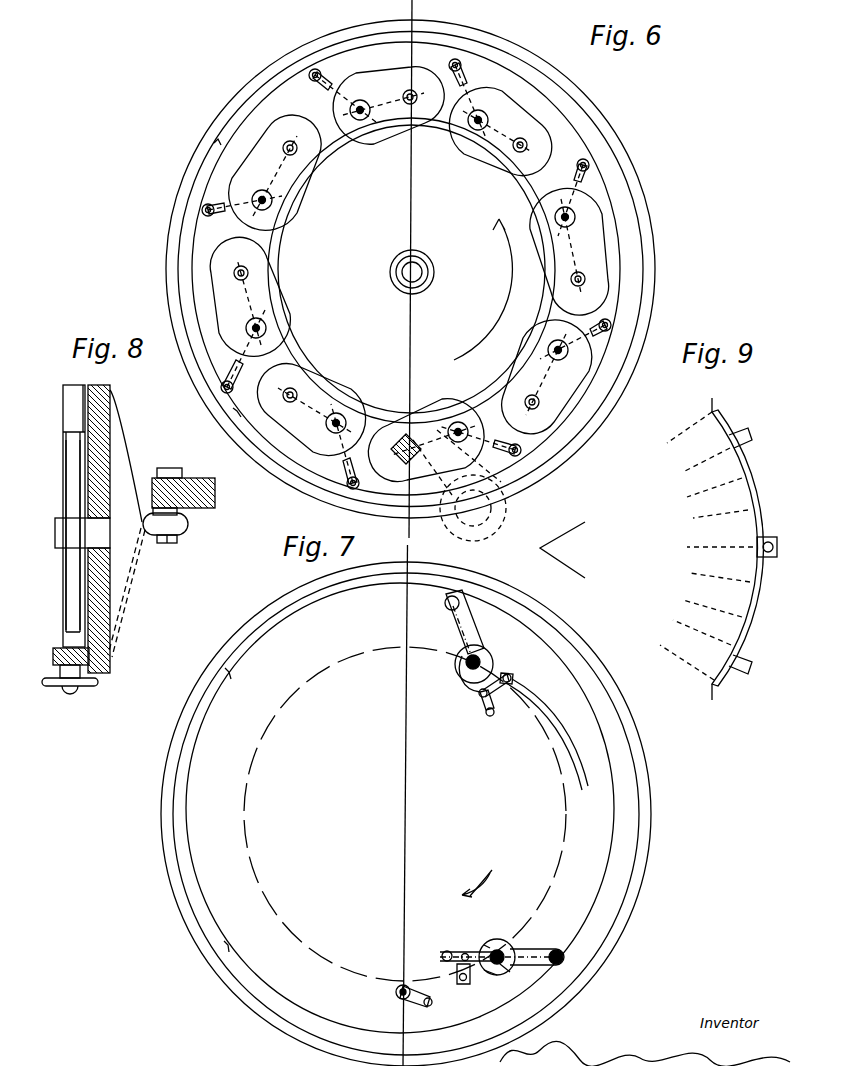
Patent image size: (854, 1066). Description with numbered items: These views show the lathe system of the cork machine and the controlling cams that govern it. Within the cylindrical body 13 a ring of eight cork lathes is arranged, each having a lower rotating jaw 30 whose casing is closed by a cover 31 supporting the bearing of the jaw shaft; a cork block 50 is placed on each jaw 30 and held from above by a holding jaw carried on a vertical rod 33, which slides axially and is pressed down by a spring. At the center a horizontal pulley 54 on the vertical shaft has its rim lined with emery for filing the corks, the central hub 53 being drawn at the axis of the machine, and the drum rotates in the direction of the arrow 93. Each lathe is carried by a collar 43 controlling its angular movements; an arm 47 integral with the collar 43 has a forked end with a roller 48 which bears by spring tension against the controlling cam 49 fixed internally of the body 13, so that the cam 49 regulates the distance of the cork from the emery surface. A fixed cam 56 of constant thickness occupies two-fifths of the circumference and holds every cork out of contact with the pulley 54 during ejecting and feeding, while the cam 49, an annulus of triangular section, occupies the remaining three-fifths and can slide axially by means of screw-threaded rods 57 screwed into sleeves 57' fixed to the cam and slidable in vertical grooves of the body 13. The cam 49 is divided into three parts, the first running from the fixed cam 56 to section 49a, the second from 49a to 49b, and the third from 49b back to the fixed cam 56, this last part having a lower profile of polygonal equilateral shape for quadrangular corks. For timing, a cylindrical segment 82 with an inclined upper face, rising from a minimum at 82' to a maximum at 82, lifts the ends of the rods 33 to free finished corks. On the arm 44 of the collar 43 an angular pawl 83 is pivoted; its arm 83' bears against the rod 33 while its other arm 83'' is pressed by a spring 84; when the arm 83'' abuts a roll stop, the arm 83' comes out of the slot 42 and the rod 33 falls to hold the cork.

In FIG. 6, the cylindrical body 13 is at (200, 140).
In FIG. 7, the cylindrical body 13 is at (164, 770).
In FIG. 8, the cylindrical body 13 is at (110, 656).
In FIG. 6, the rotating jaw 30 is at (419, 244).
In FIG. 6, the cover 31 is at (220, 306).
In FIG. 6, the vertical rod 33 is at (417, 263).
In FIG. 7, the vertical rod 33 is at (481, 664).
In FIG. 7, the slot 42 is at (494, 972).
In FIG. 7, the collar 43 is at (458, 655).
In FIG. 7, the arm 44 is at (465, 952).
In FIG. 7, the arm 47 is at (470, 640).
In FIG. 8, the arm 47 is at (214, 500).
In FIG. 7, the roller 48 is at (446, 604).
In FIG. 8, the roller 48 is at (187, 524).
In FIG. 6, the controlling cam 49 is at (212, 163).
In FIG. 7, the controlling cam 49 is at (302, 607).
In FIG. 8, the controlling cam 49 is at (124, 468).
In FIG. 9, the controlling cam 49 is at (750, 598).
In FIG. 6, the cam section 49a is at (237, 412).
In FIG. 7, the cam section 49a is at (229, 947).
In FIG. 6, the cam section 49b is at (222, 142).
In FIG. 7, the cam section 49b is at (231, 674).
In FIG. 9, the cam section 49b is at (722, 547).
In FIG. 6, the cork block 50 is at (404, 464).
In FIG. 6, the shaft hub 53 is at (434, 272).
In FIG. 6, the pulley 54 is at (460, 412).
In FIG. 6, the fixed cam 56 is at (618, 243).
In FIG. 7, the fixed cam 56 is at (622, 936).
In FIG. 8, the screw-threaded rod 57 is at (57, 535).
In FIG. 8, the sleeve 57' is at (70, 518).
In FIG. 9, the sleeve 57' is at (772, 558).
In FIG. 7, the cylindrical segment 82 is at (547, 725).
In FIG. 7, the minimum height point 82' is at (514, 977).
In FIG. 7, the angular pawl 83 is at (468, 817).
In FIG. 7, the pawl arm 83' is at (461, 802).
In FIG. 7, the pawl arm 83'' is at (479, 837).
In FIG. 7, the spring 84 is at (396, 995).
In FIG. 6, the arrow 93 is at (492, 289).